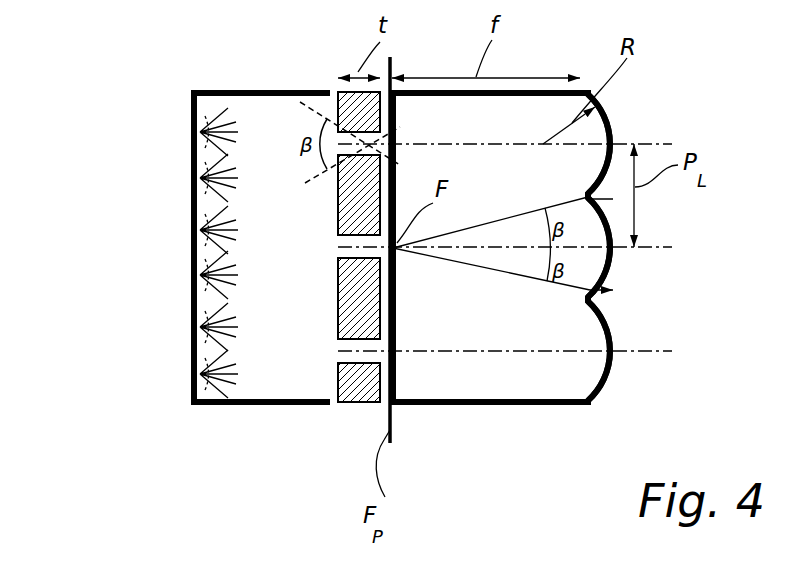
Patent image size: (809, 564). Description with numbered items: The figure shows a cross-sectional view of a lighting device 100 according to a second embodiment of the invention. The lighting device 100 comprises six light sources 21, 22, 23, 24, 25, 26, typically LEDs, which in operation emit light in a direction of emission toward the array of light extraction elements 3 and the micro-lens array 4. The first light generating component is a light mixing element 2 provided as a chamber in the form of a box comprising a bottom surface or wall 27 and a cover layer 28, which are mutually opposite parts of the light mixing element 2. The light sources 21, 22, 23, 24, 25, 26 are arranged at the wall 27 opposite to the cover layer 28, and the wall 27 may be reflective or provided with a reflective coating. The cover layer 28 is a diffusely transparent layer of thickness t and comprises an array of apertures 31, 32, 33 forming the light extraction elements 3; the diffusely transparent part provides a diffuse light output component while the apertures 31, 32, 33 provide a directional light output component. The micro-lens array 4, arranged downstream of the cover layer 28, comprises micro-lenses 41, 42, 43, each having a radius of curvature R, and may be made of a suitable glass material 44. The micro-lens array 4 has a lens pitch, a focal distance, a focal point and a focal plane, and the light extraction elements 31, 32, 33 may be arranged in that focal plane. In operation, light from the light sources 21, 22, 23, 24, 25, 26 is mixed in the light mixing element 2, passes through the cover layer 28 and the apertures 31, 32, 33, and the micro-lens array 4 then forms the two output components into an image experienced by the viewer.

The lighting device 100 is at (128, 74).
The light mixing element 2 is at (233, 92).
The light source 21 is at (192, 132).
The light source 22 is at (192, 178).
The light source 23 is at (192, 230).
The light source 24 is at (192, 275).
The light source 25 is at (192, 327).
The light source 26 is at (192, 374).
The bottom surface or wall 27 is at (200, 352).
The cover layer 28 is at (337, 242).
The array of light extraction elements 3 is at (355, 410).
The aperture 31 is at (337, 352).
The aperture 32 is at (396, 255).
The aperture 33 is at (393, 130).
The micro-lens array 4 is at (472, 404).
The micro-lens 41 is at (615, 128).
The micro-lens 42 is at (612, 260).
The micro-lens 43 is at (611, 368).
The glass material 44 is at (437, 377).